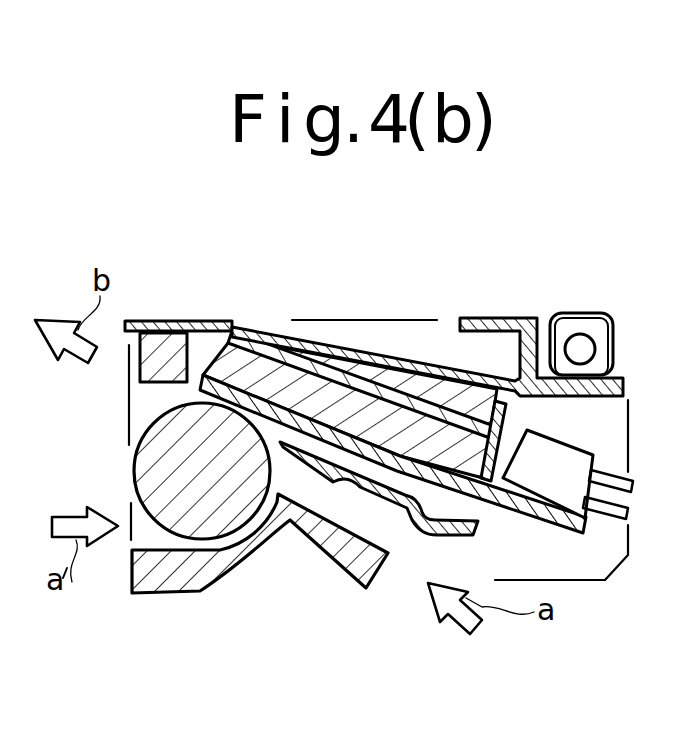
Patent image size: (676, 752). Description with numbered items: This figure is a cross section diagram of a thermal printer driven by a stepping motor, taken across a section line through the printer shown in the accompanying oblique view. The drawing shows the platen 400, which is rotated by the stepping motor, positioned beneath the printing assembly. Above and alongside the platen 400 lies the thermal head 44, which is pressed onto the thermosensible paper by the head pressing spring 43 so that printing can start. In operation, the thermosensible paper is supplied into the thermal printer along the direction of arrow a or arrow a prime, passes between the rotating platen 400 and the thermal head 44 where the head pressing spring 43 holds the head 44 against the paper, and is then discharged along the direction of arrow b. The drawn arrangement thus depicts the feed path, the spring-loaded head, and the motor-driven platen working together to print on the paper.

The head pressing spring 43 is at (430, 362).
The thermal head 44 is at (321, 388).
The platen 400 is at (152, 474).